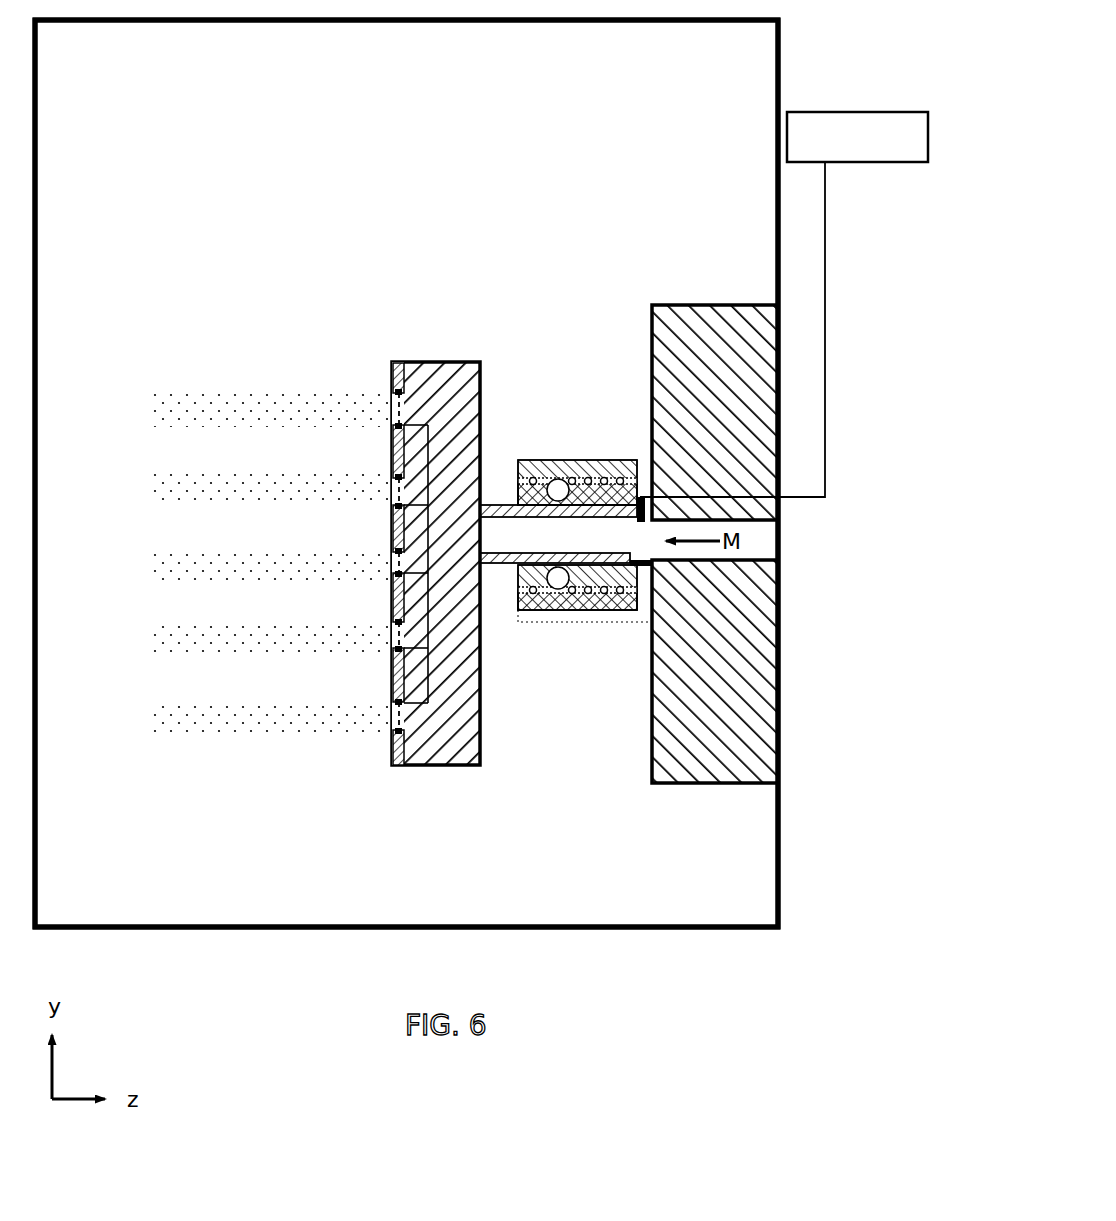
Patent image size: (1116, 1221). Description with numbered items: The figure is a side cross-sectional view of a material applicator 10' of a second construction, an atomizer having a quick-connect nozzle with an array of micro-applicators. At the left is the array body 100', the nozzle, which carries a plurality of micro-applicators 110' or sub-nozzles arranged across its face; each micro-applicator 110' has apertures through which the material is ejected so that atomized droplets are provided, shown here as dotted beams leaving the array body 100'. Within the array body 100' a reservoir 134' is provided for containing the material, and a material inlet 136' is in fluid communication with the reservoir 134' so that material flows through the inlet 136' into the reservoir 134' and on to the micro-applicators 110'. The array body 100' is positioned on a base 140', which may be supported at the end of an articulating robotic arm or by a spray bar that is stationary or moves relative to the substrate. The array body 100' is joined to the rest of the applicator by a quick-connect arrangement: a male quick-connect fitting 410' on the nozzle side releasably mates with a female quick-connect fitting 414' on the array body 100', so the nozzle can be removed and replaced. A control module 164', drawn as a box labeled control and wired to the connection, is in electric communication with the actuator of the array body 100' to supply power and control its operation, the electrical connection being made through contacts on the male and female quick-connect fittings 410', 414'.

The material applicator 10' is at (406, 473).
The array body 100' is at (397, 490).
The micro-applicators 110' is at (269, 543).
The reservoir 134' is at (514, 611).
The material inlet 136' is at (765, 658).
The base 140' is at (659, 361).
The control module 164' is at (784, 250).
The male quick-connect fitting 410' is at (566, 469).
The female quick-connect fitting 414' is at (583, 475).